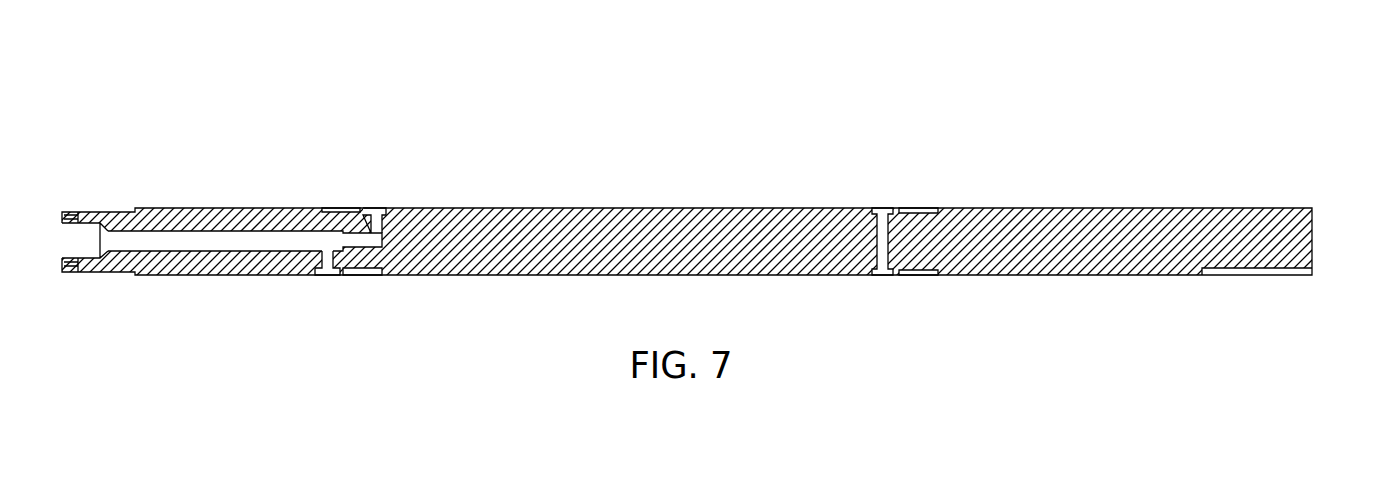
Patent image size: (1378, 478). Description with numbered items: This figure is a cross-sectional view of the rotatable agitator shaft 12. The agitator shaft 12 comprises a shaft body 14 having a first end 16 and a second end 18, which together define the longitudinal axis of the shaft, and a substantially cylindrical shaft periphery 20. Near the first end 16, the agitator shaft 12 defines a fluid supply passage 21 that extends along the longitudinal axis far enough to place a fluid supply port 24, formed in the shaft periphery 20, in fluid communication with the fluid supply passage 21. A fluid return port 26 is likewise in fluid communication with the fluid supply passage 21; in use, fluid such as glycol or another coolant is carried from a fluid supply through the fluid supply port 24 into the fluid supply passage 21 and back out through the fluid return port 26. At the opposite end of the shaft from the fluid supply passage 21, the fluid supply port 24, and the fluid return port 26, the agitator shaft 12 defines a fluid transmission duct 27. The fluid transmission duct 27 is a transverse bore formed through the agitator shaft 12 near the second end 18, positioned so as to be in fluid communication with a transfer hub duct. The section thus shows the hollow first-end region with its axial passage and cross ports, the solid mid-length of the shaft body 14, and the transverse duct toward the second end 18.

The rotatable agitator shaft 12 is at (1242, 105).
The shaft body 14 is at (1256, 210).
The first end 16 is at (120, 193).
The second end 18 is at (1151, 187).
The shaft periphery 20 is at (603, 208).
The fluid supply passage 21 is at (230, 237).
The fluid supply port 24 is at (378, 197).
The fluid return port 26 is at (326, 283).
The fluid transmission duct 27 is at (883, 218).